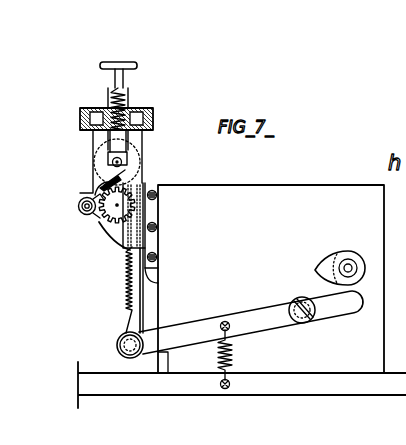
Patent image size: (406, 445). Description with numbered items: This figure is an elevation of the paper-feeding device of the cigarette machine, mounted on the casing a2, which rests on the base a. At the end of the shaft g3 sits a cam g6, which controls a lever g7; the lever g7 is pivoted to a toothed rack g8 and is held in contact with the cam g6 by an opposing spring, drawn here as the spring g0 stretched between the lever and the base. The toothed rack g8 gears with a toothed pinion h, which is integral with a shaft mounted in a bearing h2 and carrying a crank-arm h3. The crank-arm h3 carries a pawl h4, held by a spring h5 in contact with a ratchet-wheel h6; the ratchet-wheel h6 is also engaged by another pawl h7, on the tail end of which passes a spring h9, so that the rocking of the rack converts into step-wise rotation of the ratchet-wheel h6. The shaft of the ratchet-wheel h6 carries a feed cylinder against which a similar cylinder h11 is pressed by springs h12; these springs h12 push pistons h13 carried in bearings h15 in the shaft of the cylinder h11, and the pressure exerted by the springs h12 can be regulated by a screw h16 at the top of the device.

The base a is at (242, 385).
The casing a2 is at (271, 279).
The spring g0 is at (207, 357).
The shaft g3 is at (350, 266).
The cam g6 is at (326, 258).
The lever g7 is at (272, 320).
The toothed rack g8 is at (127, 291).
The toothed pinion h is at (117, 205).
The bearing h2 is at (156, 272).
The crank-arm h3 is at (80, 208).
The pawl h4 is at (93, 193).
The spring h5 is at (96, 214).
The ratchet-wheel h6 is at (106, 228).
The pawl h7 is at (138, 186).
The spring h9 is at (108, 181).
The cylinder h11 is at (140, 147).
The springs h12 is at (127, 103).
The pistons h13 is at (120, 138).
The bearings h15 is at (124, 159).
The screw h16 is at (137, 63).